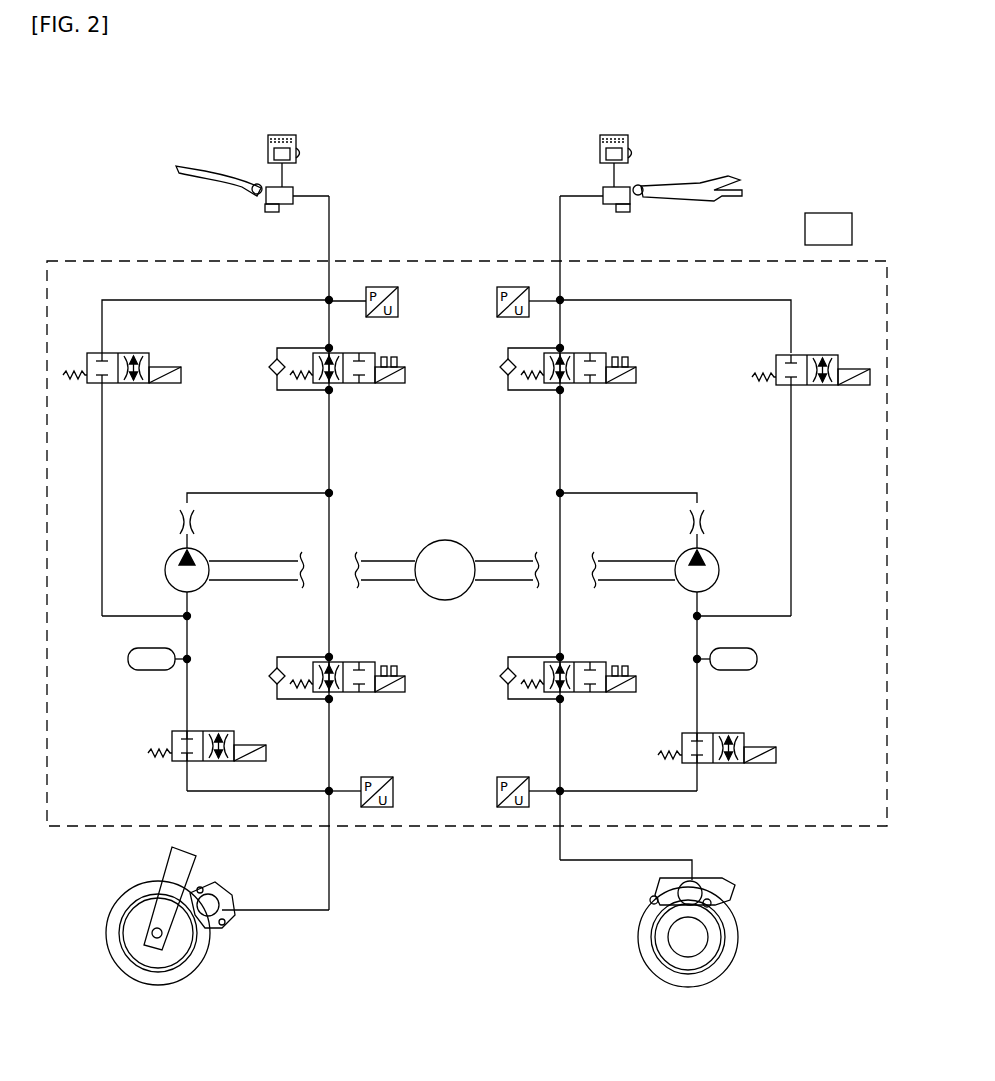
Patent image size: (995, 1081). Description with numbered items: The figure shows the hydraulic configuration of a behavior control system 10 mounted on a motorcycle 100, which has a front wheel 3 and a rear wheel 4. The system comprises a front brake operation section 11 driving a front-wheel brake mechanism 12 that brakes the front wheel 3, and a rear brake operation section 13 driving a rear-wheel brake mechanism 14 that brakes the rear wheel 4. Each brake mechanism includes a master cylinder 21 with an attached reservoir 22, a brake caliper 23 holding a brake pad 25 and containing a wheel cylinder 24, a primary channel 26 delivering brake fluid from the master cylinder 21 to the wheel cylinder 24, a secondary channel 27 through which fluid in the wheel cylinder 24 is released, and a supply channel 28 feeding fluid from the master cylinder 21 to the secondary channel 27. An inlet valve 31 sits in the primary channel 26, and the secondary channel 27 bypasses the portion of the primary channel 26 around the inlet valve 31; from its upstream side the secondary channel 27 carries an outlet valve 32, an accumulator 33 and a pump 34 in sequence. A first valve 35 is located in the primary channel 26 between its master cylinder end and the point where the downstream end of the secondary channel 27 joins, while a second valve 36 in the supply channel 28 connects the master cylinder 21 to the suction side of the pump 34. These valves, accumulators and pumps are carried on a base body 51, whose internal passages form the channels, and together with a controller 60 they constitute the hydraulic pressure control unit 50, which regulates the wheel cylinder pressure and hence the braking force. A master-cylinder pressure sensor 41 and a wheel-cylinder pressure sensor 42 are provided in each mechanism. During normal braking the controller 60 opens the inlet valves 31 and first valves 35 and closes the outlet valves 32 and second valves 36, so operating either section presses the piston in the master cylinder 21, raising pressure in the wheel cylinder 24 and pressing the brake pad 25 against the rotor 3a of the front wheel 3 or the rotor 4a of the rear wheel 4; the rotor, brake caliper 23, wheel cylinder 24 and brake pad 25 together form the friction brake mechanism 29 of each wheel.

The motorcycle 100 is at (892, 115).
The behavior control system 10 is at (90, 158).
The front brake operation section 11 is at (194, 170).
The front-wheel brake mechanism 12 is at (355, 167).
The rear brake operation section 13 is at (712, 178).
The rear-wheel brake mechanism 14 is at (538, 167).
The master cylinder 21 is at (284, 203).
The reservoir 22 is at (288, 138).
The brake caliper 23 is at (228, 893).
The wheel cylinder 24 is at (220, 925).
The brake pad 25 is at (235, 920).
The primary channel 26 is at (335, 442).
The secondary channel 27 is at (283, 790).
The supply channel 28 is at (214, 303).
The friction brake mechanism 29 is at (462, 932).
The front wheel 3 is at (179, 929).
The rotor 3a is at (188, 972).
The rear wheel 4 is at (681, 944).
The rotor 4a is at (650, 948).
The inlet valve 31 is at (372, 695).
The outlet valve 32 is at (222, 732).
The accumulator 33 is at (128, 655).
The pump 34 is at (198, 592).
The first valve 35 is at (386, 386).
The second valve 36 is at (150, 386).
The master-cylinder pressure sensor 41 is at (400, 302).
The wheel-cylinder pressure sensor 42 is at (393, 792).
The hydraulic pressure control unit 50 is at (794, 196).
The base body 51 is at (76, 260).
The controller 60 is at (840, 208).